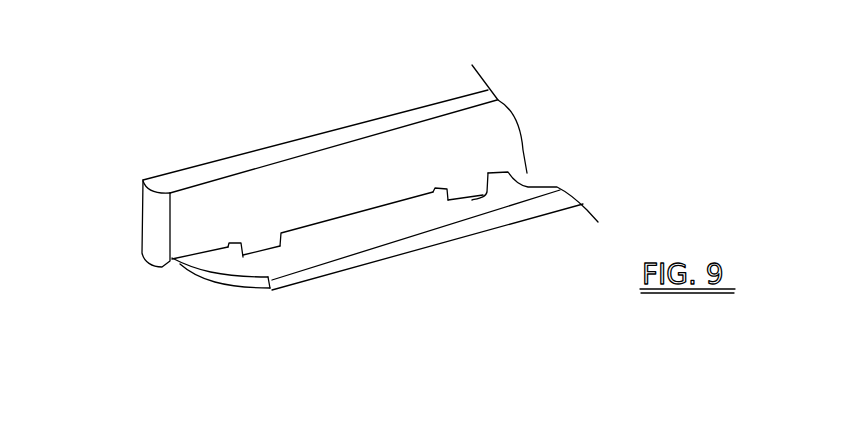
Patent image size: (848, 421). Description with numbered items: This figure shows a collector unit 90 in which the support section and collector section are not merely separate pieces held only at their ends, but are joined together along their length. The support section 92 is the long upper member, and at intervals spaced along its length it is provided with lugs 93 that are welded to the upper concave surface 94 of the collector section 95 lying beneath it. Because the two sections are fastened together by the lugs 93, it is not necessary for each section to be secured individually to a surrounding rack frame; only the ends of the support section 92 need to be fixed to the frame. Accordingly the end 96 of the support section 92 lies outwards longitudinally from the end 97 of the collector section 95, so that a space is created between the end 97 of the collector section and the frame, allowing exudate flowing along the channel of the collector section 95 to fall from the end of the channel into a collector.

The collector unit 90 is at (568, 140).
The support section 92 is at (313, 132).
The lugs 93 is at (262, 243).
The upper concave surface 94 is at (372, 229).
The collector section 95 is at (537, 217).
The end of the support section 96 is at (155, 230).
The end of the collector section 97 is at (215, 277).